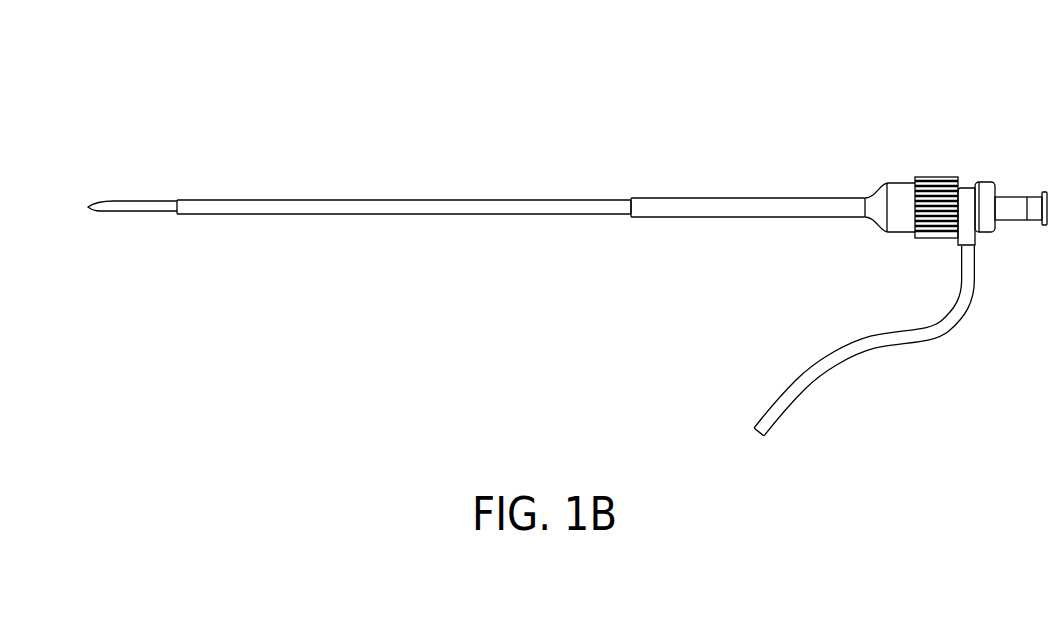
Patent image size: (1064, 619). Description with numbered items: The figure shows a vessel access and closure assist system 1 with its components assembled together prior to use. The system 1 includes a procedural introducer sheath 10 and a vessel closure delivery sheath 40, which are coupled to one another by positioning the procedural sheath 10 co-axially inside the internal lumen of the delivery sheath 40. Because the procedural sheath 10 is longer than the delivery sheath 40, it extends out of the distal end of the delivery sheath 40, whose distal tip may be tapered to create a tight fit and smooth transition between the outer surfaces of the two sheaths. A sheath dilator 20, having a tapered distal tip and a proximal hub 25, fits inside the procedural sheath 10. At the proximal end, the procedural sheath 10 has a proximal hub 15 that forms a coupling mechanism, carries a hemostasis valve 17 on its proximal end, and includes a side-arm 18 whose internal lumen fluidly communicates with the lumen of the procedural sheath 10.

The vessel access and closure assist system 1 is at (726, 62).
The procedural introducer sheath 10 is at (433, 187).
The proximal hub 15 is at (935, 178).
The hemostasis valve 17 is at (984, 218).
The side-arm 18 is at (888, 343).
The sheath dilator 20 is at (110, 192).
The proximal hub 25 is at (1010, 207).
The vessel closure delivery sheath 40 is at (803, 183).